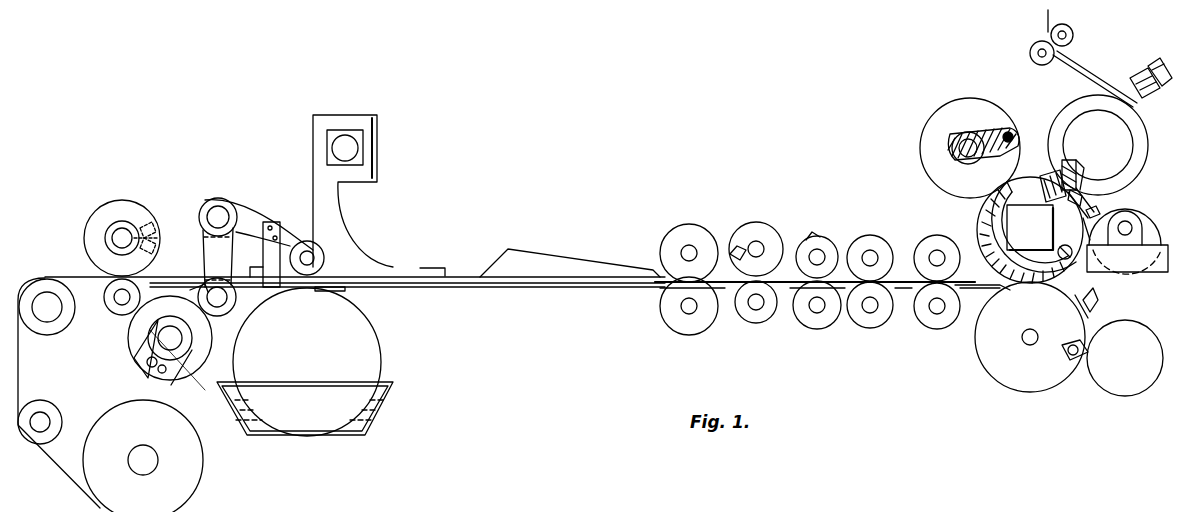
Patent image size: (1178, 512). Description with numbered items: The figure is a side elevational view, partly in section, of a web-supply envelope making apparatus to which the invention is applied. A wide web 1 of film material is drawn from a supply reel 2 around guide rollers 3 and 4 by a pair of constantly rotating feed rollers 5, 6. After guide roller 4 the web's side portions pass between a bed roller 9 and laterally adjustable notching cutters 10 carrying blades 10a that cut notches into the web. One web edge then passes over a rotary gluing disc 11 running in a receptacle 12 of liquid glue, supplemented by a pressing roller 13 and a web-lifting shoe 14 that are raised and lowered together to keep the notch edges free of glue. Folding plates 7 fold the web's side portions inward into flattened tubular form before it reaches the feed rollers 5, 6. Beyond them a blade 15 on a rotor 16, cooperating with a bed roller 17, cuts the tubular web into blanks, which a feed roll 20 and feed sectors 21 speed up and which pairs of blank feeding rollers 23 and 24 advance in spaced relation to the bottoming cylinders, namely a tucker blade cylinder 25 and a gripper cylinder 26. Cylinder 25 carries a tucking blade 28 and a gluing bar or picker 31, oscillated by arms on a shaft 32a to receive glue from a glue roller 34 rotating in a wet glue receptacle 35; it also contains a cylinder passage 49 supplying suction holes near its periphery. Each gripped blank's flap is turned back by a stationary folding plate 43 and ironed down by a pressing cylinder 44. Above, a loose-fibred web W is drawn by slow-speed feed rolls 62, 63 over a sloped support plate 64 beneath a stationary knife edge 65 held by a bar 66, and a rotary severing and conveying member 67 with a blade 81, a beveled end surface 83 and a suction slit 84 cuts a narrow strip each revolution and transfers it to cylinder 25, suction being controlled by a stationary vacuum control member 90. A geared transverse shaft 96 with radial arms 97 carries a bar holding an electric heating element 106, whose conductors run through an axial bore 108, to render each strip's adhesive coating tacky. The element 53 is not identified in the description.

The web 1 is at (19, 380).
The supply reel 2 is at (197, 488).
The guide roller 3 is at (50, 411).
The guide roller 4 is at (58, 322).
The feed roller 5 is at (673, 327).
The feed roller 6 is at (686, 232).
The folding plate 7 is at (534, 264).
The bed roller 9 is at (110, 311).
The notching cutter 10 is at (115, 213).
The blade 10a is at (153, 224).
The rotary gluing disc 11 is at (371, 338).
The receptacle 12 is at (367, 415).
The pressing roller 13 is at (324, 252).
The web-lifting plate or shoe 14 is at (327, 291).
The blade 15 is at (733, 256).
The rotor 16 is at (763, 228).
The bed roller 17 is at (744, 322).
The feed roll 20 is at (815, 332).
The feed sectors 21 is at (828, 240).
The blank feeding rollers 23 is at (871, 238).
The blank feeding rollers 24 is at (929, 243).
The tucker blade cylinder 25 is at (992, 228).
The gripper cylinder 26 is at (990, 365).
The tucking blade 28 is at (1082, 197).
The gluing bar or picker 31 is at (1092, 210).
The shaft 32a is at (1058, 256).
The glue roller 34 is at (1135, 206).
The wet glue receptacle 35 is at (1152, 272).
The stationary folding plate 43 is at (1098, 306).
The pressing cylinder 44 is at (1119, 388).
The cylinder passage 49 is at (1042, 177).
The cutter block 53 is at (1030, 227).
The feed roll 62 is at (1031, 54).
The feed roll 63 is at (1073, 33).
The support plate 64 is at (1094, 62).
The knife edge or blade 65 is at (1143, 76).
The stationary bar 66 is at (1158, 70).
The rotary strip severing and conveying member 67 is at (1138, 143).
The blade or knife edge 81 is at (1080, 190).
The beveled end surface 83 is at (1068, 164).
The suction slit 84 is at (1080, 170).
The vacuum control member 90 is at (1098, 145).
The transverse shaft 96 is at (942, 136).
The radial arms 97 is at (978, 130).
The electric heating element 106 is at (1005, 131).
The axial bore 108 is at (950, 161).
The web W is at (1113, 56).